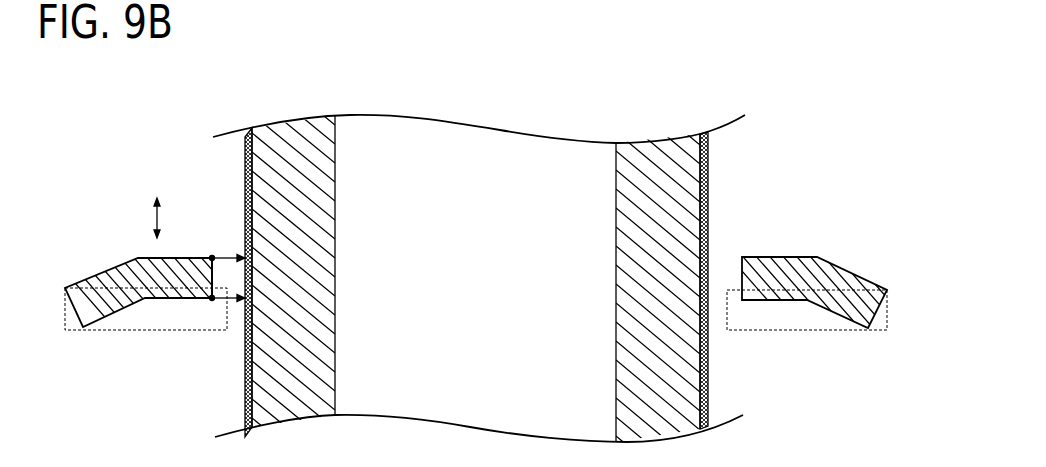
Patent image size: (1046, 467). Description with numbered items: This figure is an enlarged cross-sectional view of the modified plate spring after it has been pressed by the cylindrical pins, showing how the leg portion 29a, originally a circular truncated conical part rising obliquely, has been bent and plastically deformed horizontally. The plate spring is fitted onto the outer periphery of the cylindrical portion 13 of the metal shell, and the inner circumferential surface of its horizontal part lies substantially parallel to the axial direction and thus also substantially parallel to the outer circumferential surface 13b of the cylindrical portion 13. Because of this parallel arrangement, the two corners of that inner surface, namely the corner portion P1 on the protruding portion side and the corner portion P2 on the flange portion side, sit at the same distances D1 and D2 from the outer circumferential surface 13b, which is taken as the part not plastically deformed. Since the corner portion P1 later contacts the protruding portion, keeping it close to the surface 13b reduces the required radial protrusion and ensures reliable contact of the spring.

The cylindrical portion 13 is at (331, 198).
The outer circumferential surface of the cylindrical portion 13b is at (246, 421).
The leg portion 29a is at (132, 252).
The distance d1 D1 is at (229, 254).
The distance d2 D2 is at (228, 303).
The corner portion P1 is at (211, 257).
The corner portion P2 is at (210, 300).